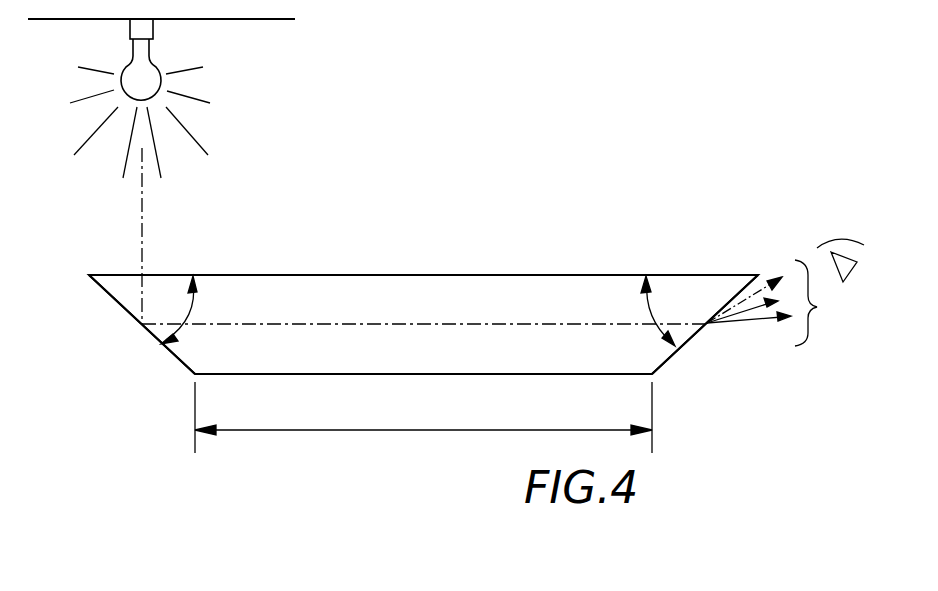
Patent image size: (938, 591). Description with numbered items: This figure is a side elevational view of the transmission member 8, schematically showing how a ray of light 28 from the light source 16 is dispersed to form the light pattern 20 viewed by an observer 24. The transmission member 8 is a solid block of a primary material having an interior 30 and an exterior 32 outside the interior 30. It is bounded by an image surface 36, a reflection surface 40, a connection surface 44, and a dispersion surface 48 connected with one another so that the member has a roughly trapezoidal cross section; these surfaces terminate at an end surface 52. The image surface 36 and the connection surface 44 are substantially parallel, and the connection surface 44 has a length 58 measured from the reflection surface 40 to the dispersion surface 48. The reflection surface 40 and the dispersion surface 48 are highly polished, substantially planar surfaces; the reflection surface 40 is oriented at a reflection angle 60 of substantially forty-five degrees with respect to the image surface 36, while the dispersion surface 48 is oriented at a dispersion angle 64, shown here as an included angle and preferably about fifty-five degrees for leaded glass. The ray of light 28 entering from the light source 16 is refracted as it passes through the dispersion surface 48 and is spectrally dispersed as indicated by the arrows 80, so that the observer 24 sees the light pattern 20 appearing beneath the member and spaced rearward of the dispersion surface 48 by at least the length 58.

The light source 16 is at (163, 82).
The ray of light 28 is at (142, 230).
The transmission member 8 is at (287, 268).
The image surface 36 is at (238, 275).
The interior 30 is at (342, 285).
The end surface 52 is at (425, 285).
The reflection surface 40 is at (160, 342).
The dispersion surface 48 is at (687, 347).
The connection surface 44 is at (308, 374).
The exterior 32 is at (426, 407).
The length 58 is at (440, 430).
The reflection angle 60 is at (188, 315).
The dispersion angle 64 is at (647, 312).
The arrows 80 is at (743, 305).
The light pattern 20 is at (817, 307).
The observer 24 is at (834, 241).